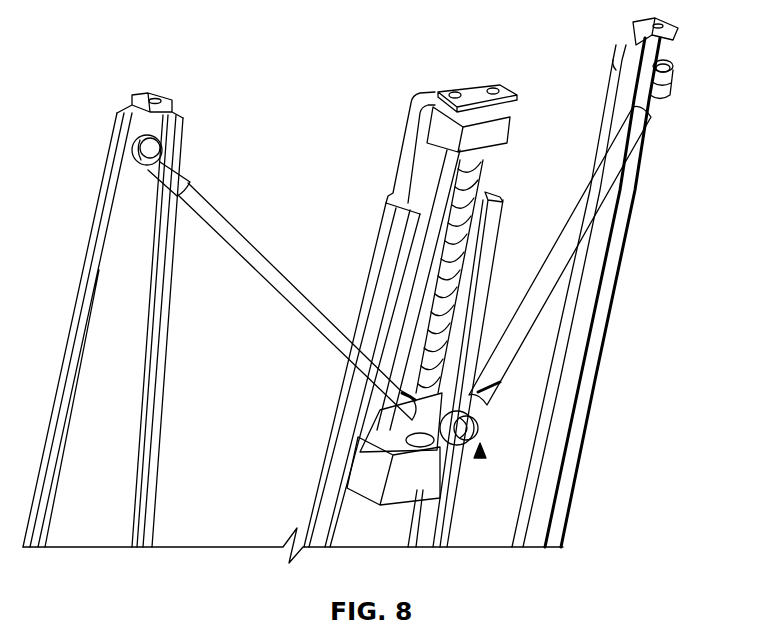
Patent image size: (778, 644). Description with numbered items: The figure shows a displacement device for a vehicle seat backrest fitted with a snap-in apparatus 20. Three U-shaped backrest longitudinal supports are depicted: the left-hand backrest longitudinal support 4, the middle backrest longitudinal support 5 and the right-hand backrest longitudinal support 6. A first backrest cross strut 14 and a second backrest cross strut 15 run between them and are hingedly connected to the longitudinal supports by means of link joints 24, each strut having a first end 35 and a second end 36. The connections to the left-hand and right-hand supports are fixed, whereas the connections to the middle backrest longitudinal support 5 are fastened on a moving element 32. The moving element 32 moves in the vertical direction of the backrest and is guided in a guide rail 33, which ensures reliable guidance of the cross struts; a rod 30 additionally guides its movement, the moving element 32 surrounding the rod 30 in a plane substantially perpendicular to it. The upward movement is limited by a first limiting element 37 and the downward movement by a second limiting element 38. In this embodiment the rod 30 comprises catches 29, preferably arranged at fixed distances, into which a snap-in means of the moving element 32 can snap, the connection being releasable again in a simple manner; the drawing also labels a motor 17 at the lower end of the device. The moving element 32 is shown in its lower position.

The left-hand backrest longitudinal support 4 is at (625, 220).
The middle backrest longitudinal support 5 is at (385, 260).
The right-hand backrest longitudinal support 6 is at (107, 393).
The first backrest cross strut 14 is at (600, 193).
The second backrest cross strut 15 is at (260, 252).
The motor 17 is at (329, 481).
The snap-in apparatus 20 is at (480, 458).
The link joint 24 is at (143, 150).
The catches 29 is at (463, 287).
The rod 30 is at (463, 200).
The moving element 32 is at (480, 417).
The guide rail 33 is at (427, 157).
The first end 35 is at (653, 98).
The second end 36 is at (383, 420).
The first limiting element 37 is at (503, 130).
The second limiting element 38 is at (363, 472).